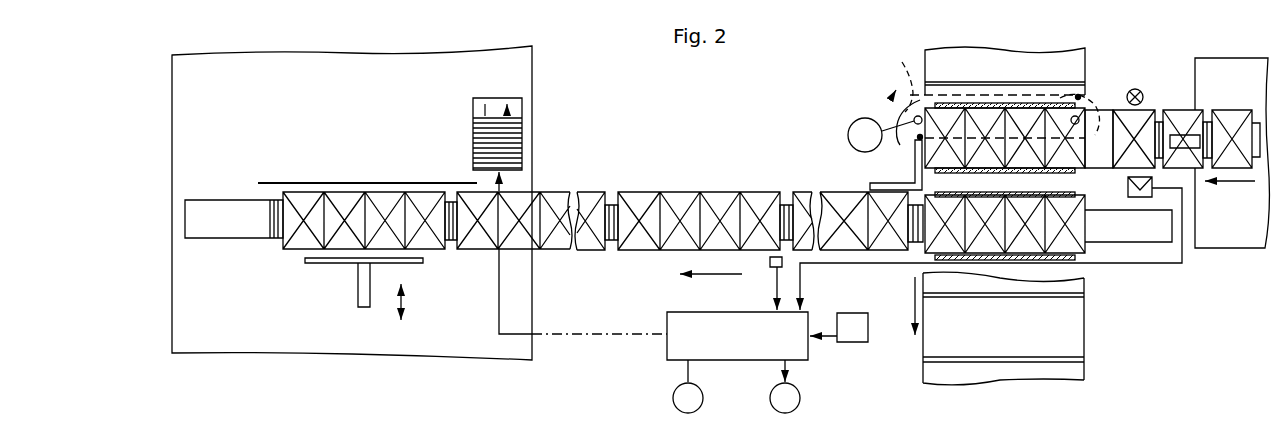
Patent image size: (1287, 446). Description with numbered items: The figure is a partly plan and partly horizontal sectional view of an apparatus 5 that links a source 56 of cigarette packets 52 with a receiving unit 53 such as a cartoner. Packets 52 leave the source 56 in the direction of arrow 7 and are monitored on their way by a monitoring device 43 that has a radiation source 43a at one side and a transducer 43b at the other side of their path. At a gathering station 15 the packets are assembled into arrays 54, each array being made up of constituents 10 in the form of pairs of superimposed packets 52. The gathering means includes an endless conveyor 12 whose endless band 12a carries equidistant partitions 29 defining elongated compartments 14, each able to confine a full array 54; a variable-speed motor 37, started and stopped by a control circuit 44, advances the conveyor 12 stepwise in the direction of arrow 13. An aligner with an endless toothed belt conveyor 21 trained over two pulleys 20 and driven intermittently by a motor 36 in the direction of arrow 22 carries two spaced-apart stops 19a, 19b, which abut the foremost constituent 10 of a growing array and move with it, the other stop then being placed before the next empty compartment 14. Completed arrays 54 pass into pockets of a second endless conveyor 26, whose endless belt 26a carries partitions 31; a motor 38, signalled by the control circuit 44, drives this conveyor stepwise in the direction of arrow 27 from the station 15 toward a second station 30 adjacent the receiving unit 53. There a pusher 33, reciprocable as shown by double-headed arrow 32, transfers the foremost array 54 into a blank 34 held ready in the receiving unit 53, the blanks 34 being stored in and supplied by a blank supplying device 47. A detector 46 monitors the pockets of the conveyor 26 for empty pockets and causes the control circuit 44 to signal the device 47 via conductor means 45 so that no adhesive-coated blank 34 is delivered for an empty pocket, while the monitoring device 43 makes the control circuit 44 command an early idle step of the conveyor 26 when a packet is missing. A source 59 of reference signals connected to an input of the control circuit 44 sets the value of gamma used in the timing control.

The drive unit 5 is at (1208, 102).
The arrow 7 is at (1228, 184).
The constituent 10 is at (1012, 115).
The endless conveyor 12 is at (1090, 352).
The endless band 12a is at (935, 374).
The arrow 13 is at (915, 307).
The compartment 14 is at (1067, 332).
The gathering station 15 is at (1017, 120).
The stop 19a is at (915, 143).
The stop 19b is at (1078, 108).
The pulley 20 is at (991, 111).
The endless toothed belt conveyor 21 is at (926, 72).
The arrow 22 is at (888, 107).
The second endless conveyor 26 is at (551, 178).
The endless belt 26a is at (612, 205).
The arrow 27 is at (742, 275).
The partition 29 is at (1068, 82).
The second station 30 is at (394, 170).
The partition 31 is at (457, 249).
The double-headed arrow 32 is at (404, 299).
The pusher 33 is at (363, 263).
The blank 34 is at (309, 182).
The motor 36 is at (850, 125).
The variable-speed electric motor 37 is at (800, 398).
The variable-speed electric motor 38 is at (673, 398).
The monitoring device 43 is at (1137, 82).
The radiation source 43a is at (1143, 92).
The transducer 43b is at (1146, 197).
The control circuit 44 is at (739, 348).
The conductor means 45 is at (588, 338).
The detector 46 is at (773, 266).
The blank supplying device 47 is at (496, 108).
The cigarette packet 52 is at (1137, 120).
The receiving unit 53 is at (367, 101).
The array 54 is at (294, 252).
The source 56 is at (1230, 250).
The source of reference signals 59 is at (850, 312).